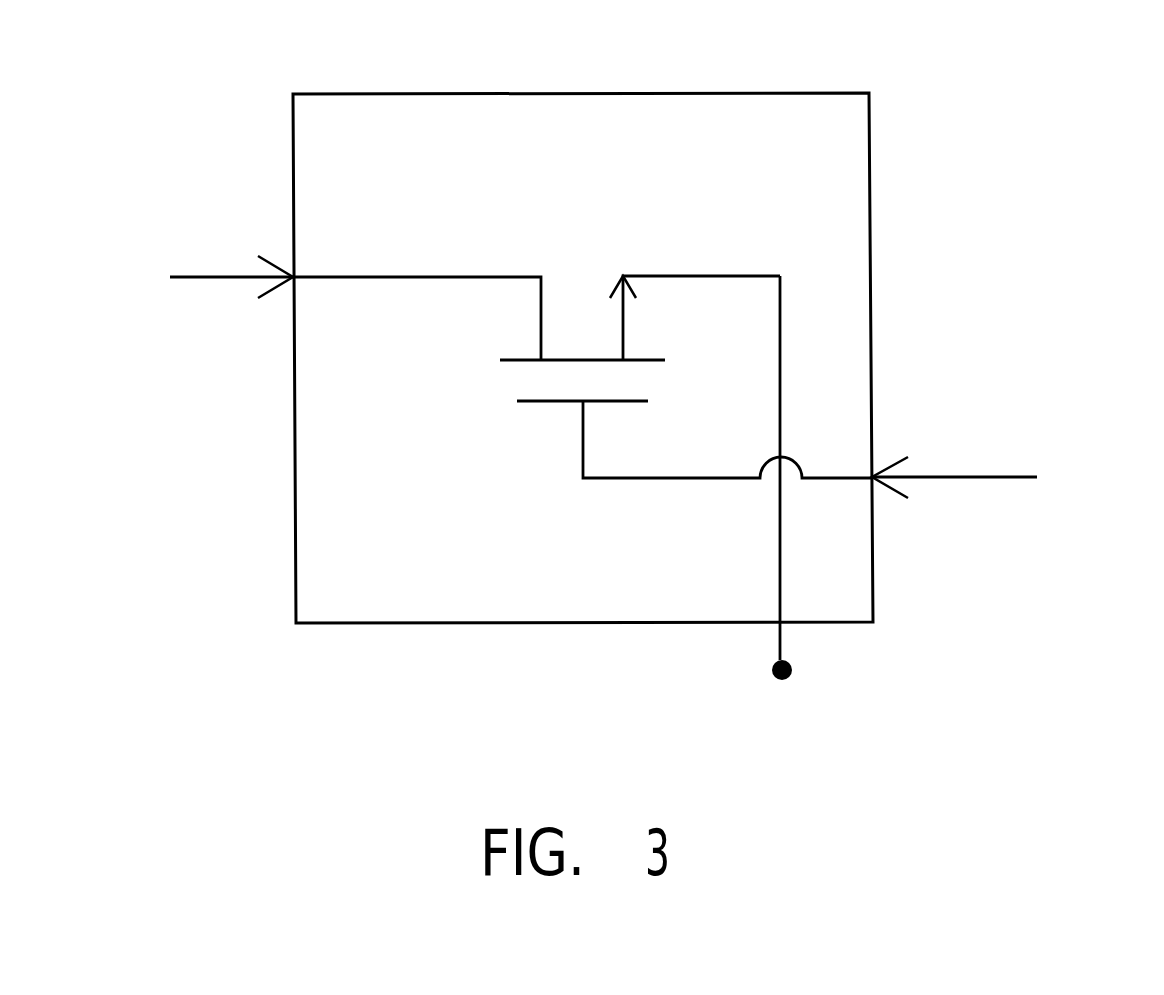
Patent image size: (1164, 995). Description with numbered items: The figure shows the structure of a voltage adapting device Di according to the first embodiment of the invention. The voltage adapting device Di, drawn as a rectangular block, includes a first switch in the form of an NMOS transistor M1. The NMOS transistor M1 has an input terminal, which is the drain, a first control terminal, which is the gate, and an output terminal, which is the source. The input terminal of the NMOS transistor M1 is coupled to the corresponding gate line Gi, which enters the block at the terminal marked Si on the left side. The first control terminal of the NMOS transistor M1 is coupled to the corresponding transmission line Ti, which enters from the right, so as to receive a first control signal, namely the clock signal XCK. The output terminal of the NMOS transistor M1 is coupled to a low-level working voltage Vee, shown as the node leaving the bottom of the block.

The voltage adapting device Di is at (1135, 68).
The gate line Gi is at (213, 276).
The input terminal Si is at (266, 304).
The NMOS transistor M1 is at (686, 350).
The transmission line Ti is at (963, 477).
The clock signal XCK is at (901, 507).
The low-level working voltage Vee is at (783, 503).